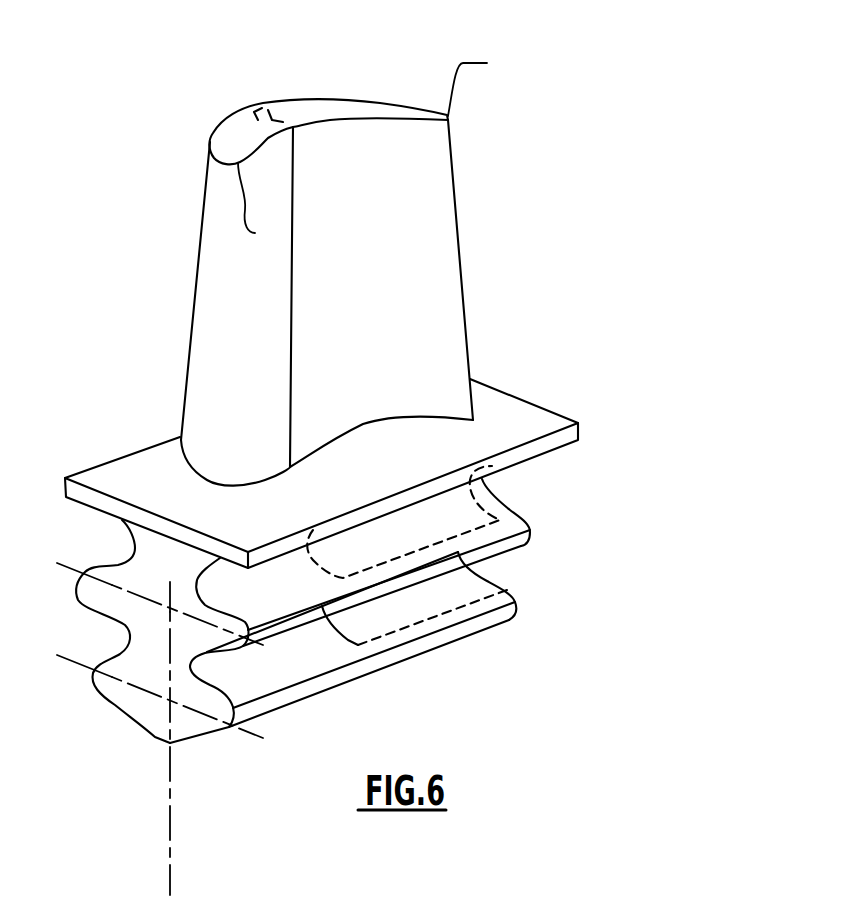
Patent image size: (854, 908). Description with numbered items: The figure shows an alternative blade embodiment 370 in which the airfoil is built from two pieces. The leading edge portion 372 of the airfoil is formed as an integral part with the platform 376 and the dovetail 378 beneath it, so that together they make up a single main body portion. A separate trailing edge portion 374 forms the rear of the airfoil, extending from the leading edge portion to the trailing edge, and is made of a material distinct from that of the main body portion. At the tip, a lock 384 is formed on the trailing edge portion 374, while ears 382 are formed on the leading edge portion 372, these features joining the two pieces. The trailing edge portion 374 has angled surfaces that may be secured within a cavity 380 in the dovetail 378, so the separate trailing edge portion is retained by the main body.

The embodiment 370 is at (397, 451).
The leading edge portion 372 is at (230, 138).
The trailing edge portion 374 is at (425, 205).
The platform 376 is at (510, 430).
The dovetail 378 is at (500, 533).
The cavity 380 is at (470, 512).
The ears 382 is at (254, 112).
The lock 384 is at (272, 120).